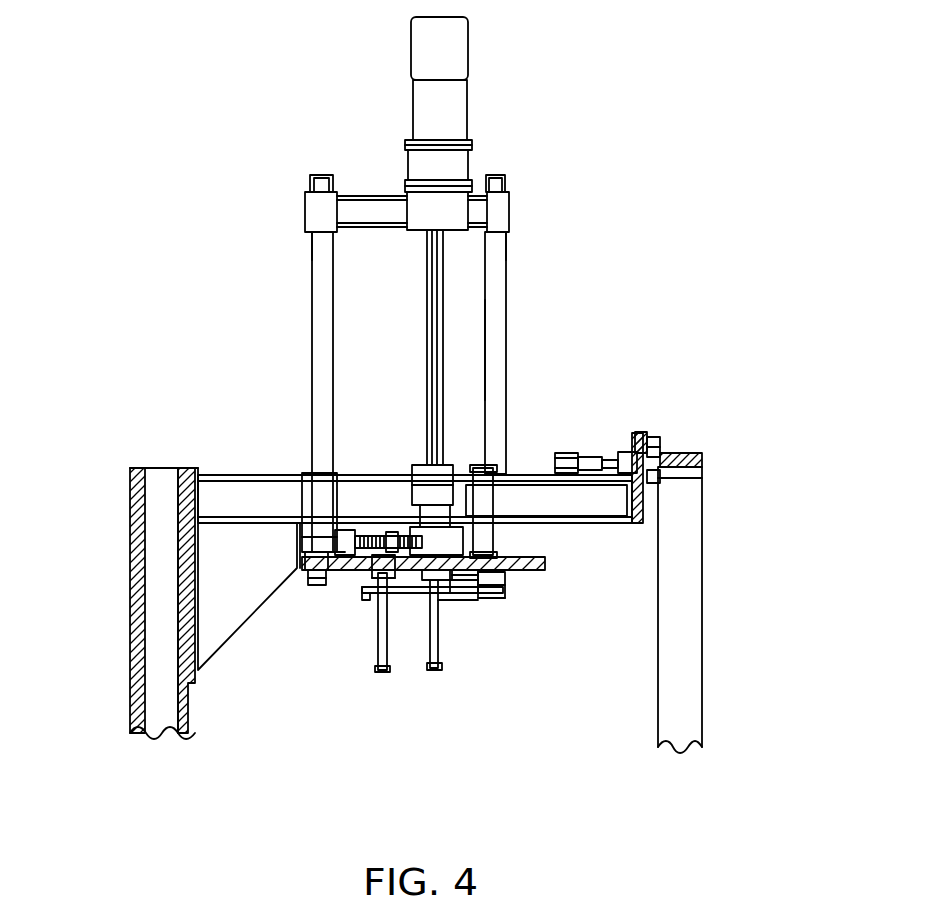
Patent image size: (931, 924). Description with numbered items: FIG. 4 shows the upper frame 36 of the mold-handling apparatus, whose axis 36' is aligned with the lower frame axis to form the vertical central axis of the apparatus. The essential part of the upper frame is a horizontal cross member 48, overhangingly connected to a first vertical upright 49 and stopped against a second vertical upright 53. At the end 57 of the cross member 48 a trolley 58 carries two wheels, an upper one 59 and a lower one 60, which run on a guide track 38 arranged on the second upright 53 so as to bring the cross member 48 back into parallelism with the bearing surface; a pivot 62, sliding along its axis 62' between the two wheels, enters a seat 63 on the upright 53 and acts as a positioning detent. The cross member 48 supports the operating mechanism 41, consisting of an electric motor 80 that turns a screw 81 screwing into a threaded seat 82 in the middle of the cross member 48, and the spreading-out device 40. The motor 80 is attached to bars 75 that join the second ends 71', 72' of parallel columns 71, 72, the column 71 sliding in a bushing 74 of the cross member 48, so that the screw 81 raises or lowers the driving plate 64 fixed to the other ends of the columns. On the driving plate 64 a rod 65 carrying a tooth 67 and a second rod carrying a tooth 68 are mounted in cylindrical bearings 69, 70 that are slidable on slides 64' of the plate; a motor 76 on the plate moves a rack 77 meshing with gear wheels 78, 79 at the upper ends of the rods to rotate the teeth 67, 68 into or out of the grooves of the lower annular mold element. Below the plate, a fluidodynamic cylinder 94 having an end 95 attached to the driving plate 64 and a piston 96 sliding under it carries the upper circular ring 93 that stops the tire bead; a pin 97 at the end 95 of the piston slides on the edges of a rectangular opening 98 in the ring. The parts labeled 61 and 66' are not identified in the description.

The driving mechanism 41 is at (478, 104).
The electric motor 80 is at (422, 210).
The bars 75 is at (367, 210).
The column 71 is at (284, 392).
The second end of column 71' is at (262, 234).
The column 72 is at (515, 353).
The second end of column 72' is at (546, 234).
The screw 81 is at (437, 265).
The axis of upper frame 36' is at (502, 347).
The upper frame 36 is at (554, 346).
The threaded seat 82 is at (420, 470).
The rack 77 is at (478, 540).
The cross member 48 is at (522, 476).
The end of cross member 57 is at (616, 492).
The fluidodynamic cylinder 94 is at (525, 514).
The first vertical upright 49 is at (186, 468).
The support bracket 61 is at (202, 470).
The bushing 74 is at (333, 465).
The driving plate 64 is at (293, 608).
The slides 64' is at (336, 608).
The end 95 is at (530, 562).
The motor 76 is at (300, 540).
The gear wheel 78 is at (395, 535).
The cylindrical bearing 69 is at (373, 573).
The tooth 67 is at (378, 660).
The rod 65 is at (375, 653).
The tooth 68 is at (438, 647).
The spreading-out device 40 is at (424, 597).
The circular ring 93 is at (490, 587).
The pin 97 is at (483, 603).
The rectangular opening 98 is at (463, 598).
The gear wheel 79 is at (460, 600).
The cylindrical bearing 70 is at (447, 598).
The lever end 66' is at (485, 693).
The piston 96 is at (487, 568).
The pivot 62 is at (608, 416).
The axis of pivot 62' is at (624, 409).
The trolley 58 is at (648, 445).
The upper wheel 59 is at (660, 452).
The seat 63 is at (690, 455).
The guide track 38 is at (700, 470).
The lower wheel 60 is at (663, 478).
The second vertical upright 53 is at (678, 560).